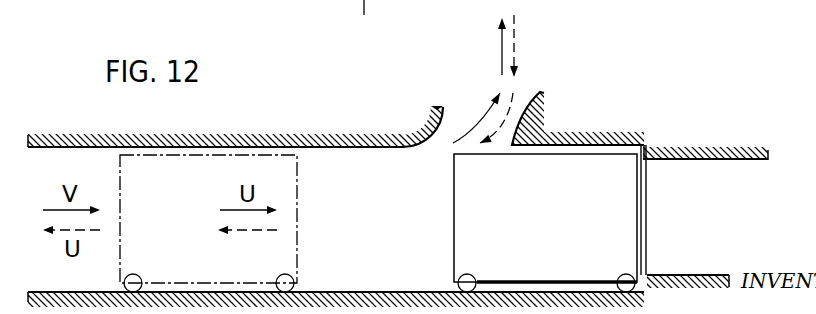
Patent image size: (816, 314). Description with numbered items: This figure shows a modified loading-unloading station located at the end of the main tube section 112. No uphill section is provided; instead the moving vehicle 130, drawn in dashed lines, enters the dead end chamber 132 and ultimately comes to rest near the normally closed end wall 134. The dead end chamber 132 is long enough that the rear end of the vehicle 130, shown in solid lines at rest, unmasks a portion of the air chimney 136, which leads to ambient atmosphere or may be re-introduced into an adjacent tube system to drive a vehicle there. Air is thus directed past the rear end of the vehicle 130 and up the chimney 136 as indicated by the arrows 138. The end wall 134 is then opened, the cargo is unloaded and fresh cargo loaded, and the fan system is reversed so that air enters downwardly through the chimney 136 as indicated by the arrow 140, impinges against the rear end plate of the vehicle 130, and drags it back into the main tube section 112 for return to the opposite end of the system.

The tube section 112 is at (354, 143).
The vehicle 130 is at (275, 177).
The dead end chamber 132 is at (580, 148).
The end wall 134 is at (647, 181).
The air chimney 136 is at (450, 112).
The arrows 138 is at (489, 107).
The arrow 140 is at (517, 46).